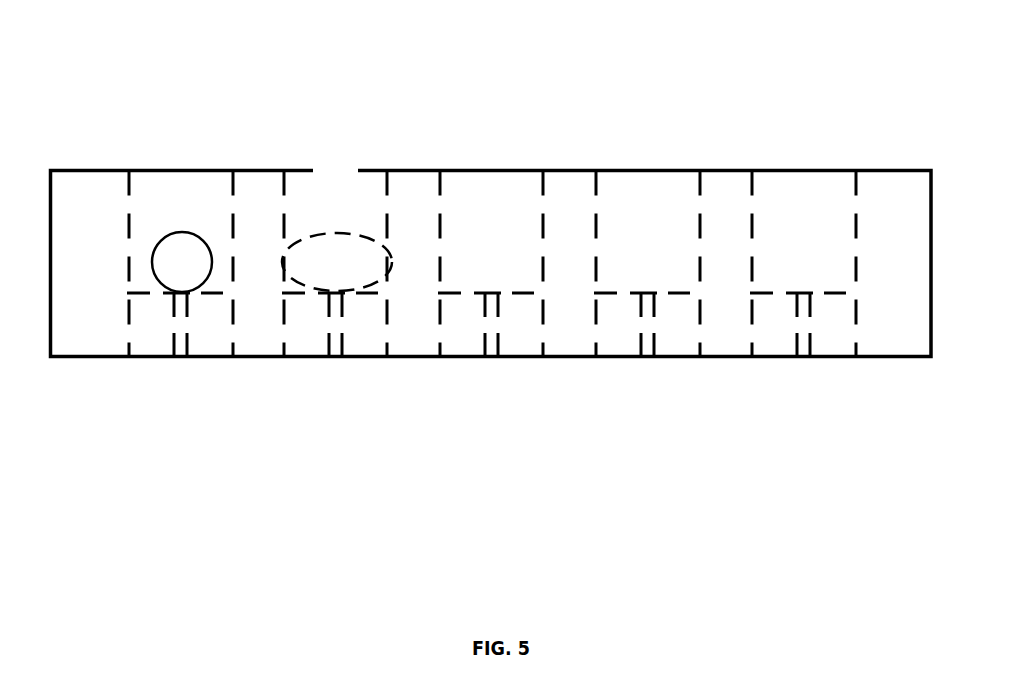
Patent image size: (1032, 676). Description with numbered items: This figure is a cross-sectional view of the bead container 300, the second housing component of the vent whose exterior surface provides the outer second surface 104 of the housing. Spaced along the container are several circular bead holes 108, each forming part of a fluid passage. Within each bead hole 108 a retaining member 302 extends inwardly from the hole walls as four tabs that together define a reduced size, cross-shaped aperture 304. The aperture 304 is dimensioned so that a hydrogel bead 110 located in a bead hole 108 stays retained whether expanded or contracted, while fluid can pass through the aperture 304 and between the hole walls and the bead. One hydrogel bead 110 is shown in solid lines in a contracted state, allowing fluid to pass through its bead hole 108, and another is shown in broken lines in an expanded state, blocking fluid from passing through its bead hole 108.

The bead container 300 is at (659, 71).
The outer second surface 104 is at (560, 358).
The bead hole 108 is at (162, 203).
The hydrogel bead 110 is at (152, 261).
The retaining member 302 is at (212, 330).
The aperture 304 is at (175, 341).